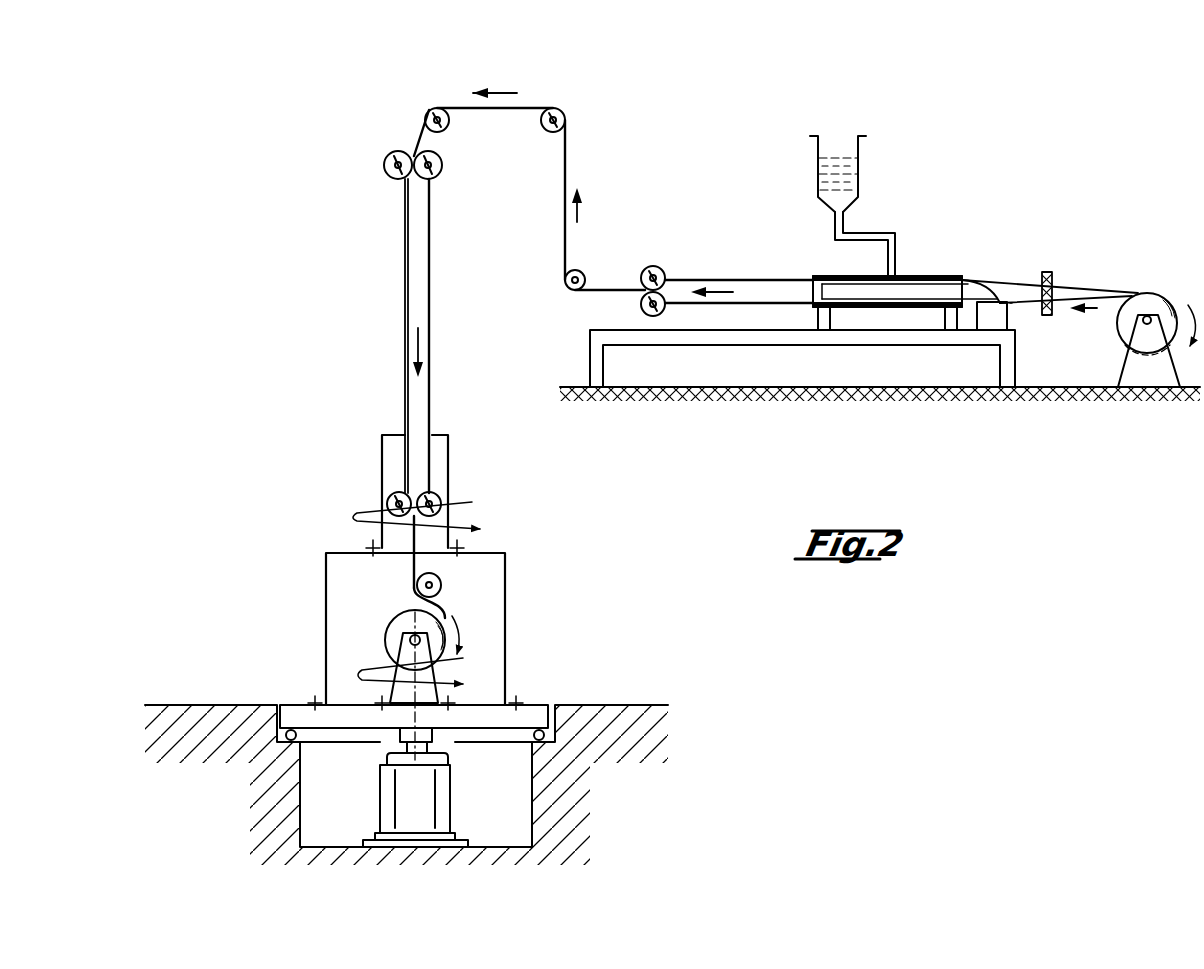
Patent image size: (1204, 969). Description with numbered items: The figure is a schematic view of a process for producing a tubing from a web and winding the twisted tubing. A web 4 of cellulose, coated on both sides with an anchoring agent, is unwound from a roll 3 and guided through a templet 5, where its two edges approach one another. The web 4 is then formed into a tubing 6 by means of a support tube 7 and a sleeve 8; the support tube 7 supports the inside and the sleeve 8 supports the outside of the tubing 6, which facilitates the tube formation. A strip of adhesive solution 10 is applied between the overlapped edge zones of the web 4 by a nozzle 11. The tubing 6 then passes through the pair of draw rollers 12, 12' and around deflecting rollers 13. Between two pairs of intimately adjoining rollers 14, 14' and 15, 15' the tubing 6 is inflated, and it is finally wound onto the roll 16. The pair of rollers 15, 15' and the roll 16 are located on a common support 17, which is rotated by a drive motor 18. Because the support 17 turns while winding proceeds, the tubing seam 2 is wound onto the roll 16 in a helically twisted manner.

The tubing seam 2 is at (402, 284).
The roll 3 is at (1122, 330).
The web 4 is at (1105, 290).
The templet 5 is at (1047, 271).
The tubing 6 is at (563, 238).
The support tube 7 is at (925, 292).
The sleeve 8 is at (943, 275).
The adhesive solution 10 is at (848, 181).
The nozzle 11 is at (893, 272).
The draw roller 12 is at (632, 308).
The draw roller 12' is at (672, 261).
The deflecting rollers 13 is at (541, 122).
The roller 14 is at (444, 176).
The roller 14' is at (376, 176).
The roller 15 is at (452, 488).
The roller 15' is at (370, 488).
The roll 16 is at (396, 620).
The common support 17 is at (509, 590).
The drive motor 18 is at (385, 800).